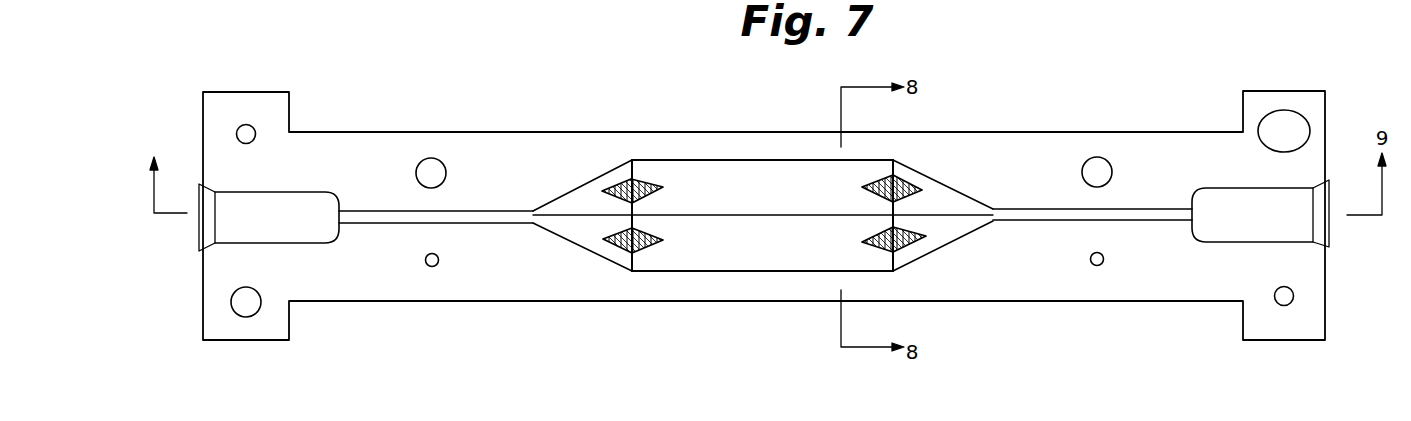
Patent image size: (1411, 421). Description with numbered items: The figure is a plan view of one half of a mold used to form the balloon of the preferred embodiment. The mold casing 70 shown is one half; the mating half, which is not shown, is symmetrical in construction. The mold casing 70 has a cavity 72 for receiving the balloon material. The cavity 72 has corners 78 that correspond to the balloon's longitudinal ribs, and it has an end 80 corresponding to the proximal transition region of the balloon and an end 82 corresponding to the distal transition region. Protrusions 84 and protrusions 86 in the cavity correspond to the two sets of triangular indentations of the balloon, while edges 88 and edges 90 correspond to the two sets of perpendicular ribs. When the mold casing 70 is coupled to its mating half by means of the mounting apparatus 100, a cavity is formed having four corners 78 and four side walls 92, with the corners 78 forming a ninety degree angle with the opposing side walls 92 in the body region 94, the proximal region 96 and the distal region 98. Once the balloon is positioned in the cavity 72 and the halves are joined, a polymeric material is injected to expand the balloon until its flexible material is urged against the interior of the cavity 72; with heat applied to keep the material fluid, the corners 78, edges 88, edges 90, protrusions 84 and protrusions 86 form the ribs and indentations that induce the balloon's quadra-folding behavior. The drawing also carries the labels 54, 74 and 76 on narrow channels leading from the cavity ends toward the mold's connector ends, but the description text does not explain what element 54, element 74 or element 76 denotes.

The port 54 is at (613, 177).
The mold casing 70 is at (652, 118).
The cavity 72 is at (727, 170).
The left shaft channel 74 is at (497, 218).
The right shaft channel 76 is at (1058, 219).
The corners 78 is at (870, 160).
The end 80 is at (582, 238).
The end 82 is at (957, 237).
The protrusions 84 is at (622, 247).
The protrusions 86 is at (963, 205).
The edges 88 is at (652, 160).
The edges 90 is at (908, 180).
The side walls 92 is at (697, 170).
The body region 94 is at (778, 173).
The proximal region 96 is at (562, 200).
The distal region 98 is at (1020, 198).
The mounting apparatus 100 is at (247, 127).